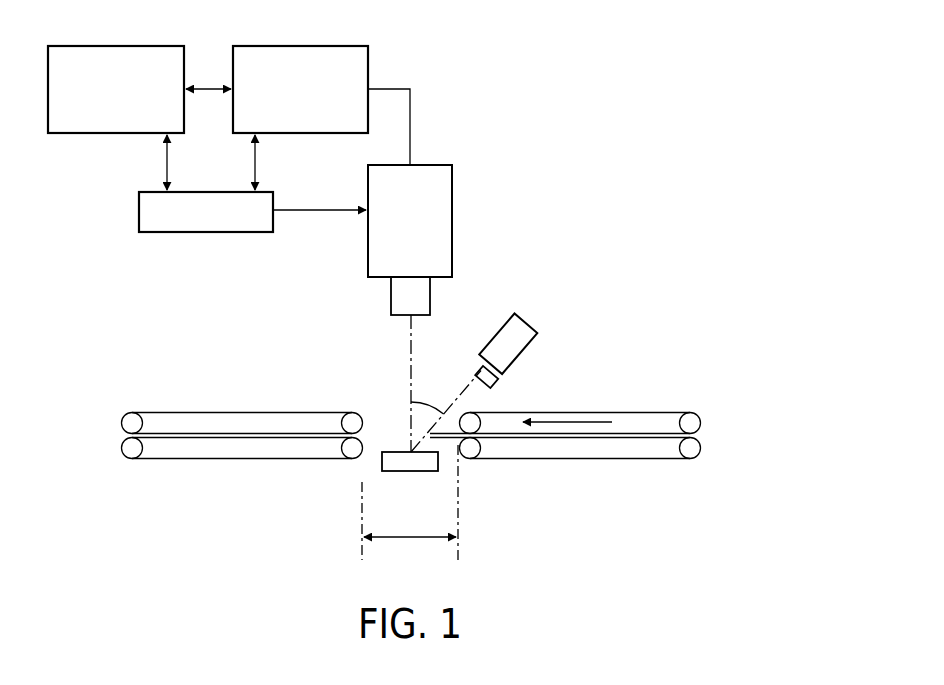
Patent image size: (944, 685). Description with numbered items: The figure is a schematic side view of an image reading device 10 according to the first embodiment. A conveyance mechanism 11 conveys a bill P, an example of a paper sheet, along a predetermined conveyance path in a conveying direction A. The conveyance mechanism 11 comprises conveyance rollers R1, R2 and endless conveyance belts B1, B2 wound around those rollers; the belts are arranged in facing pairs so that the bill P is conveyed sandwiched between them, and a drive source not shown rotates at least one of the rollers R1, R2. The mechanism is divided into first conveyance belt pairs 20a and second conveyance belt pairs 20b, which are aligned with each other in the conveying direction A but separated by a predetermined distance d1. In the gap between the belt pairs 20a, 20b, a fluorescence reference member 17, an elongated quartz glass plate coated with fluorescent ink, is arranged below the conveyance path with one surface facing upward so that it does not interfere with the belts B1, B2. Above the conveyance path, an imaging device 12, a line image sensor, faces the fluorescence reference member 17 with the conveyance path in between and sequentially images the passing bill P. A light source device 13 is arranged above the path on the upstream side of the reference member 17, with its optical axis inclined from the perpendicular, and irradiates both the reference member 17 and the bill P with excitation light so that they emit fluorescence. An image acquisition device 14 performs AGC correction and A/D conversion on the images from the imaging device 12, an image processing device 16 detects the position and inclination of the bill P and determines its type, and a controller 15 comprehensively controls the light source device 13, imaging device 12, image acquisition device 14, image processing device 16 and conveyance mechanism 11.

The image reading device 10 is at (484, 344).
The conveyance mechanism 11 is at (405, 437).
The imaging device 12 is at (443, 219).
The light source device 13 is at (518, 328).
The image acquisition device 14 is at (306, 46).
The controller 15 is at (246, 233).
The image processing device 16 is at (122, 46).
The fluorescence reference member 17 is at (404, 474).
The first conveyance belt pairs 20a is at (583, 474).
The second conveyance belt pairs 20b is at (250, 474).
The conveyance rollers R1 is at (350, 414).
The conveyance rollers R2 is at (126, 418).
The conveyance belts B1 is at (195, 412).
The conveyance belts B2 is at (197, 460).
The bill P is at (455, 446).
The conveying direction A is at (567, 404).
The predetermined distance d1 is at (410, 503).